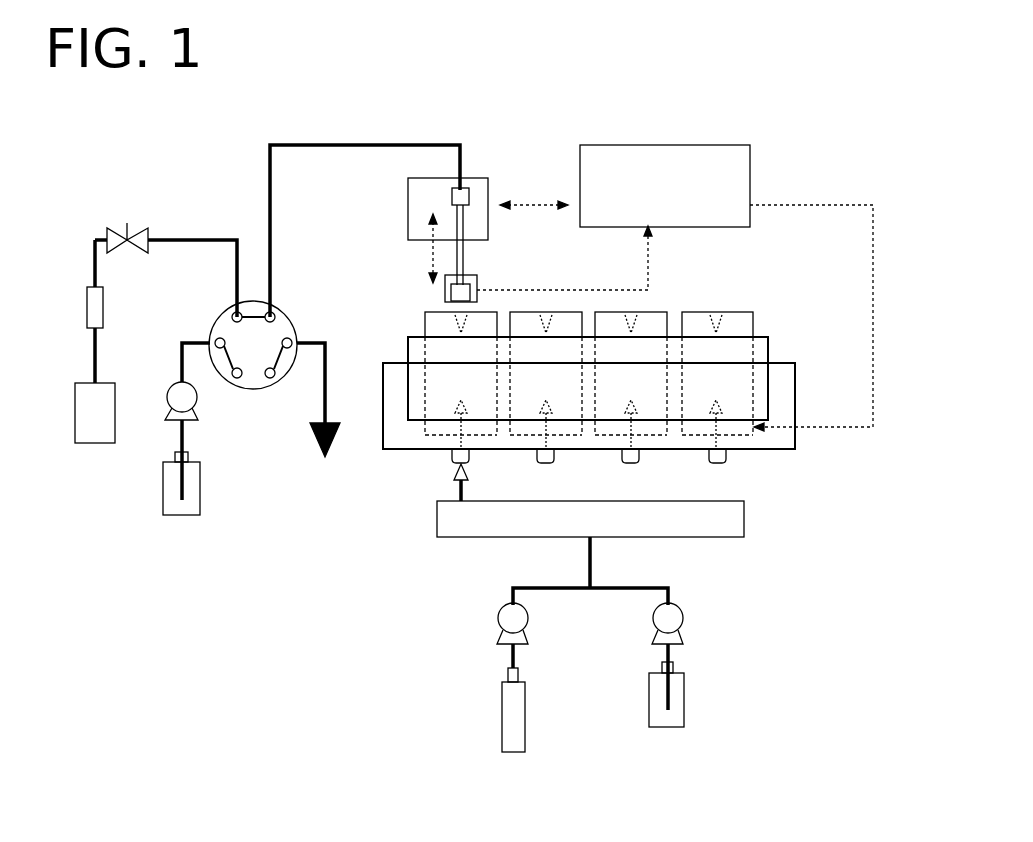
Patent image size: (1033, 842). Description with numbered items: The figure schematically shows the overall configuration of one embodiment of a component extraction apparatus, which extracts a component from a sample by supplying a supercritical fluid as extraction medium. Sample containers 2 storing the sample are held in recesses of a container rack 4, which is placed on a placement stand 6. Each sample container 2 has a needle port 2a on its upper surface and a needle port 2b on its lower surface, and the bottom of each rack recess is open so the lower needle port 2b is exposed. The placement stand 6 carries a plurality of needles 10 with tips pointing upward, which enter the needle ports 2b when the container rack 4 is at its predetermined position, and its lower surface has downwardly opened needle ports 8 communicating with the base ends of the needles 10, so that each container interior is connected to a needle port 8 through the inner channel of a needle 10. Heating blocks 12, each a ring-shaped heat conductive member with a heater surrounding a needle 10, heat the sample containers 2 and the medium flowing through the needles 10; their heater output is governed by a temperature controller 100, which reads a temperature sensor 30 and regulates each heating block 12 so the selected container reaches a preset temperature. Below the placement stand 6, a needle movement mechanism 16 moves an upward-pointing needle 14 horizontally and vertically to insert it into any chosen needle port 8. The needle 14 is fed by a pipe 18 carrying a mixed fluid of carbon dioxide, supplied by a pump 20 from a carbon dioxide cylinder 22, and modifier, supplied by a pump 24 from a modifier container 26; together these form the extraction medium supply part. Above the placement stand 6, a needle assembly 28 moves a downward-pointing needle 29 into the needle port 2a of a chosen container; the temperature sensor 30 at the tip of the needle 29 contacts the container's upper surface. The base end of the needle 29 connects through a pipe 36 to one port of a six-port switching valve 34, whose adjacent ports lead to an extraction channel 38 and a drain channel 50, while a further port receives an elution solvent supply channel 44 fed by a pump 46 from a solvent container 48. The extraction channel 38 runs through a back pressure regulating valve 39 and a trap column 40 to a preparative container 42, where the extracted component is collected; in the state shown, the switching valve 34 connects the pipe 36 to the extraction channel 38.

The temperature controller 100 is at (732, 125).
The sample container 2 is at (753, 312).
The needle port 2a is at (715, 312).
The needle port 2b is at (723, 407).
The container rack 4 is at (770, 337).
The placement stand 6 is at (797, 408).
The needle port 8 is at (718, 463).
The needle 10 is at (723, 440).
The heating block 12 is at (700, 425).
The needle 14 is at (458, 488).
The needle movement mechanism 16 is at (437, 528).
The pipe 18 is at (588, 570).
The pump 20 is at (495, 620).
The carbon dioxide cylinder 22 is at (502, 707).
The pump 24 is at (682, 618).
The modifier container 26 is at (685, 700).
The needle assembly 28 is at (487, 178).
The needle 29 is at (465, 253).
The temperature sensor 30 is at (445, 290).
The switching valve 34 is at (295, 320).
The pipe 36 is at (325, 142).
The extraction channel 38 is at (213, 233).
The back pressure regulating valve 39 is at (108, 230).
The trap column 40 is at (105, 305).
The preparative container 42 is at (95, 447).
The elution solvent supply channel 44 is at (188, 342).
The pump 46 is at (200, 400).
The solvent container 48 is at (200, 482).
The drain channel 50 is at (327, 342).